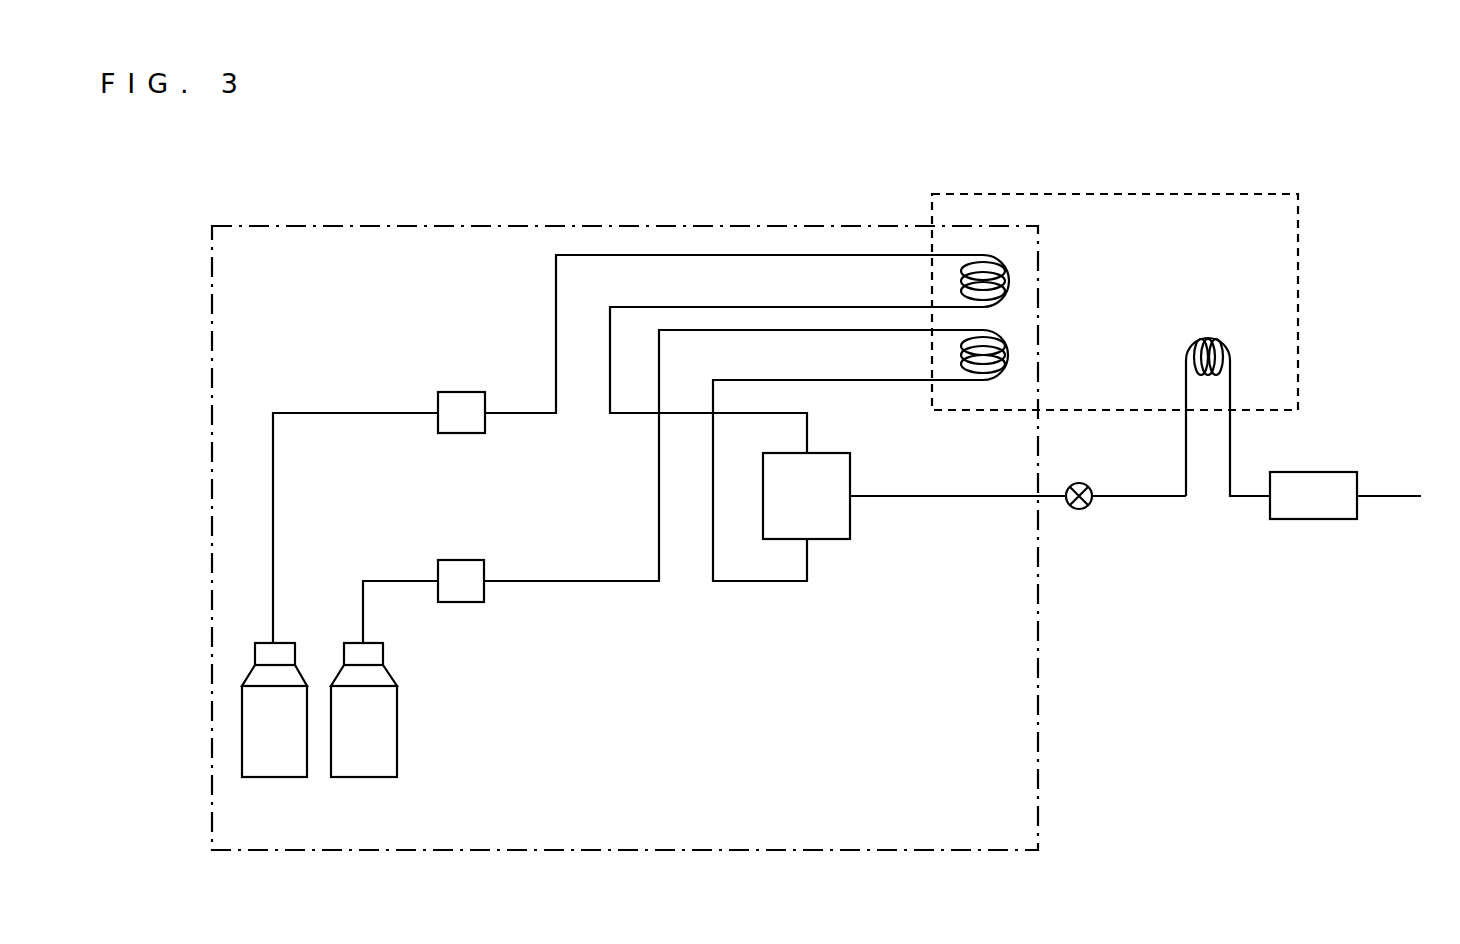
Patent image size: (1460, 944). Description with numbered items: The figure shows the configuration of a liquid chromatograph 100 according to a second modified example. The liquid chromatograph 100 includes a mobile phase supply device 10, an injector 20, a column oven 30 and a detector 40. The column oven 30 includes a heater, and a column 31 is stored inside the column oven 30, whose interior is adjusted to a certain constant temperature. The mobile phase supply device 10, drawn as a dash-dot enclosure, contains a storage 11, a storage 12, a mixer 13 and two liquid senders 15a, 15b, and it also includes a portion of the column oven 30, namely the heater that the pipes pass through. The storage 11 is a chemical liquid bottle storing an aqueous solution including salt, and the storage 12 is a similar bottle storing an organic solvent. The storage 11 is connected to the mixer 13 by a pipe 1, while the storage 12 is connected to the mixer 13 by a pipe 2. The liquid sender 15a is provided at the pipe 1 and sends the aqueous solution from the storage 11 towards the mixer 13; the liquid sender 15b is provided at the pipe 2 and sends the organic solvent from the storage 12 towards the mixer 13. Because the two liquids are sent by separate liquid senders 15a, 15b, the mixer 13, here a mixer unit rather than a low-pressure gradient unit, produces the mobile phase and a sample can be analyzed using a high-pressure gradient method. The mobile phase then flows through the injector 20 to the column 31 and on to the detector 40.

The pipe 1 is at (797, 305).
The pipe 2 is at (797, 380).
The mobile phase supply device 10 is at (623, 215).
The storage 11 is at (275, 778).
The storage 12 is at (363, 778).
The mixer 13 is at (824, 448).
The liquid sender 15a is at (463, 392).
The liquid sender 15b is at (463, 559).
The injector 20 is at (1079, 483).
The column oven 30 is at (1115, 192).
The column 31 is at (1208, 337).
The detector 40 is at (1313, 470).
The liquid chromatograph 100 is at (1432, 263).